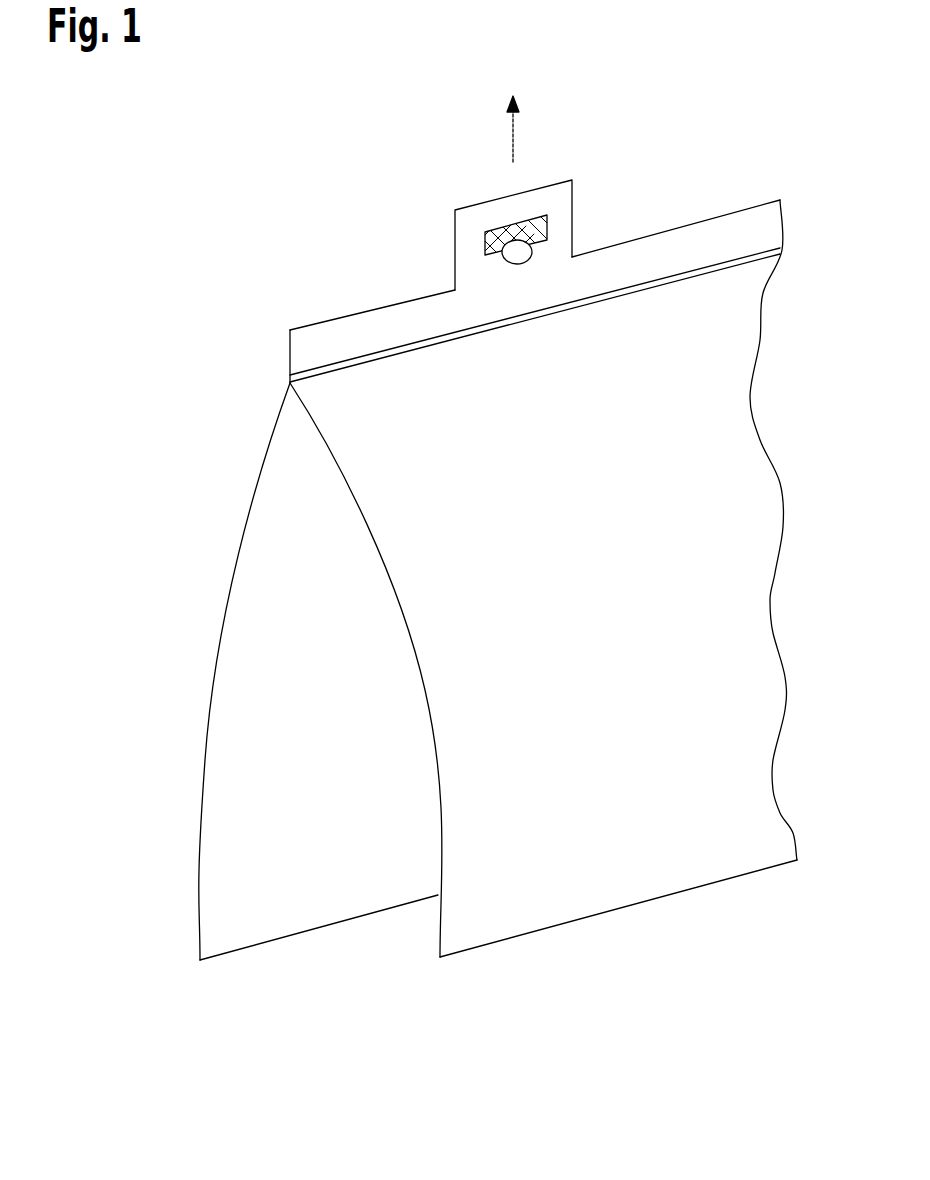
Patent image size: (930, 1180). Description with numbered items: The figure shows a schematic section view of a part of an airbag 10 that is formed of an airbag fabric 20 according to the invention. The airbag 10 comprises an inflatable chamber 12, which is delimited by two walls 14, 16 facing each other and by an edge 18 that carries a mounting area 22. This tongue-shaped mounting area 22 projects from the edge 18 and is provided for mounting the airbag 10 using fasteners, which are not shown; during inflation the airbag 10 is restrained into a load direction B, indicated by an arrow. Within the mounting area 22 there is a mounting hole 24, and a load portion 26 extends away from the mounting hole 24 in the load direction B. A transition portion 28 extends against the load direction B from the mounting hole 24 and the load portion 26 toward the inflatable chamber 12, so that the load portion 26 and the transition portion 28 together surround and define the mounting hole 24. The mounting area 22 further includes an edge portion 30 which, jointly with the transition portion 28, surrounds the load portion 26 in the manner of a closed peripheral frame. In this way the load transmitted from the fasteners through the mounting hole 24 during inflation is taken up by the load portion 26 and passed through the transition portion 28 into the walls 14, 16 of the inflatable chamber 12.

The airbag 10 is at (258, 186).
The inflatable chamber 12 is at (341, 879).
The wall 14 is at (253, 598).
The wall 16 is at (447, 637).
The edge 18 is at (728, 248).
The airbag fabric 20 is at (248, 515).
The mounting area 22 is at (447, 201).
The mounting hole 24 is at (513, 255).
The load portion 26 is at (548, 233).
The transition portion 28 is at (522, 288).
The edge portion 30 is at (525, 205).
The load direction B is at (511, 143).